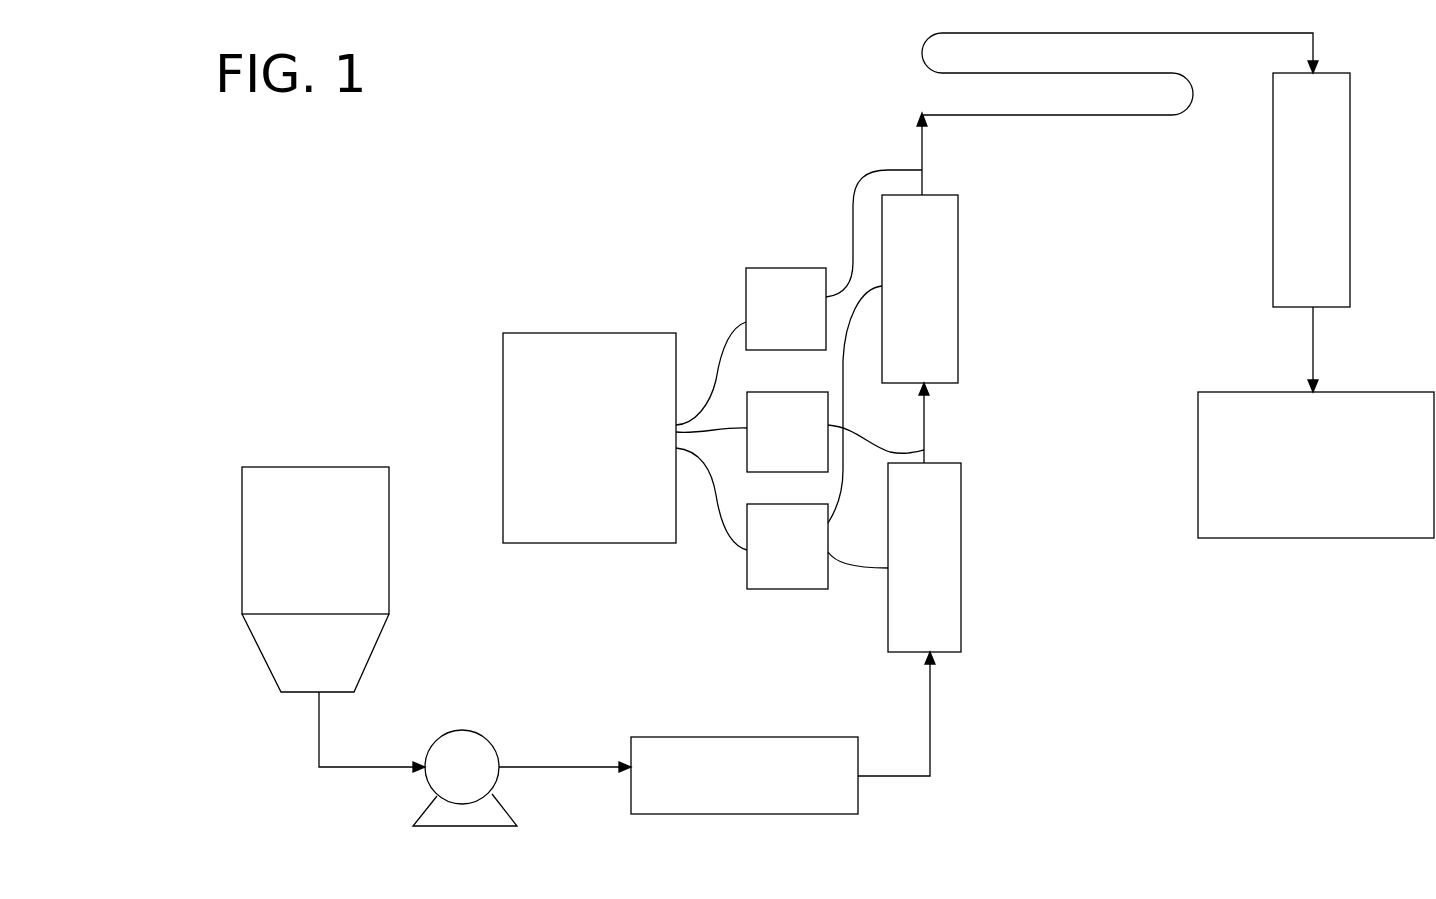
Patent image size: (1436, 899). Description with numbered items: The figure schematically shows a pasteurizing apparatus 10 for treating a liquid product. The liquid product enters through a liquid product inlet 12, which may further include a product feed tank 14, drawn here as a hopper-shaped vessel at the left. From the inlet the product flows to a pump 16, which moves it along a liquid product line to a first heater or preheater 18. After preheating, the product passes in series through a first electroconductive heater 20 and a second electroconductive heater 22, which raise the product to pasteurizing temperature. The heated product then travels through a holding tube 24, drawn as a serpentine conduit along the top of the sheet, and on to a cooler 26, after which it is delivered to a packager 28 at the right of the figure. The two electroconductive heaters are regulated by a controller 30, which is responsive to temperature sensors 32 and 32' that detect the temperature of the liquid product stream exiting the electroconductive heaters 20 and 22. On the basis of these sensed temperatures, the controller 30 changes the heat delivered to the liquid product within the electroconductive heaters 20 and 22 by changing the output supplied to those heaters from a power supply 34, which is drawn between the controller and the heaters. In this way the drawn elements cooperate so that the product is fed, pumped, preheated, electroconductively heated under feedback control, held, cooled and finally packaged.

The pasteurizing apparatus 10 is at (540, 145).
The liquid product inlet 12 is at (265, 657).
The product feed tank 14 is at (242, 497).
The pump 16 is at (470, 732).
The preheater 18 is at (677, 737).
The first electroconductive heater 20 is at (960, 537).
The second electroconductive heater 22 is at (958, 253).
The holding tube 24 is at (920, 47).
The cooler 26 is at (1350, 113).
The packager 28 is at (1407, 390).
The controller 30 is at (552, 333).
The temperature sensor 32 is at (810, 260).
The temperature sensor 32' is at (793, 376).
The power supply 34 is at (788, 590).